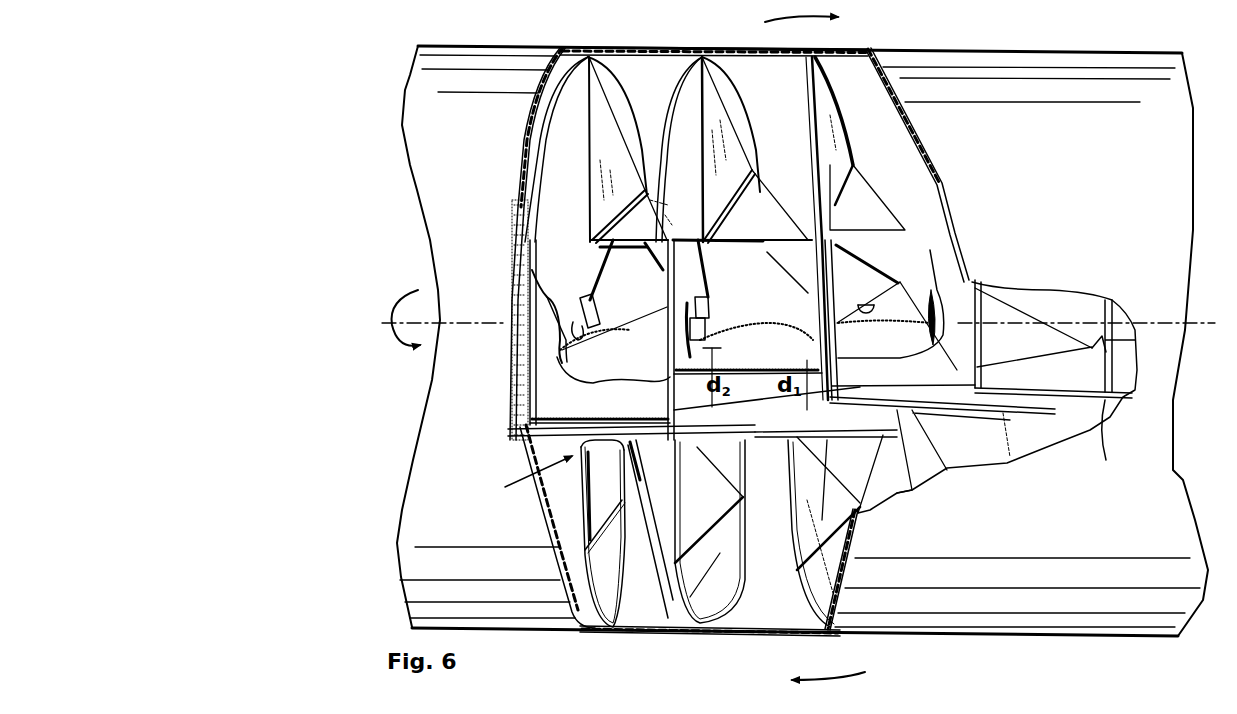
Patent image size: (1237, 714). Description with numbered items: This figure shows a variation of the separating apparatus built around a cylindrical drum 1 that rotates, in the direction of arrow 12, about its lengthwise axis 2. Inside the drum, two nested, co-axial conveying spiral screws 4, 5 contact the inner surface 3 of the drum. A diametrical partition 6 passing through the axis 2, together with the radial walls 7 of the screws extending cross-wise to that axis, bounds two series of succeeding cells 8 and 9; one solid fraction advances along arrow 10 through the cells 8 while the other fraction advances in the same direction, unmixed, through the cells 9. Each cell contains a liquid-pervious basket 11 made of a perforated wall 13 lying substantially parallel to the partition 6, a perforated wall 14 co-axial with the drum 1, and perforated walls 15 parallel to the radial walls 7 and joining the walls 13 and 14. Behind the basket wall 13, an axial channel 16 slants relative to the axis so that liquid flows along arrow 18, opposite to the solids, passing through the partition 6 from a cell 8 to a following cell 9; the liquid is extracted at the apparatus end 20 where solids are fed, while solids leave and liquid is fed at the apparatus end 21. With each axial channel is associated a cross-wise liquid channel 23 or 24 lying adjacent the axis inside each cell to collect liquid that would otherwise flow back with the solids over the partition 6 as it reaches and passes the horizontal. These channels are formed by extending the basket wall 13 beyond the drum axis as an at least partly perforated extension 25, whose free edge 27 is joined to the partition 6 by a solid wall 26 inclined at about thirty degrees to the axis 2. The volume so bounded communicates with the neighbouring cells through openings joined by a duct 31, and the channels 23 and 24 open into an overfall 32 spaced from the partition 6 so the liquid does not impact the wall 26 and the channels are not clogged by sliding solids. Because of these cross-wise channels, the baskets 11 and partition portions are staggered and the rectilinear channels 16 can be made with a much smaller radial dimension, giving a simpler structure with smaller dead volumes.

The cylindrical drum 1 is at (1152, 476).
The lengthwise axis 2 is at (1190, 336).
The inner surface 3 is at (661, 50).
The conveying spiral screw 4 is at (530, 476).
The conveying spiral screw 5 is at (848, 123).
The partition 6 is at (769, 329).
The radial walls 7 is at (652, 506).
The cells 8 is at (762, 152).
The cells 9 is at (710, 532).
The arrow 10 is at (844, 667).
The basket 11 is at (548, 400).
The arrow 12 is at (404, 335).
The perforated wall 13 is at (745, 339).
The perforated wall 14 is at (613, 384).
The perforated walls 15 is at (549, 292).
The axial channel 16 is at (657, 427).
The arrow 18 is at (785, 21).
The outlet section 20 is at (1042, 396).
The apparatus end 21 is at (404, 414).
The liquid channel 23 is at (600, 287).
The liquid channel 24 is at (580, 340).
The extension 25 is at (766, 316).
The solid wall 26 is at (864, 304).
The free edge 27 is at (872, 277).
The duct 31 is at (598, 304).
The overfall 32 is at (576, 318).